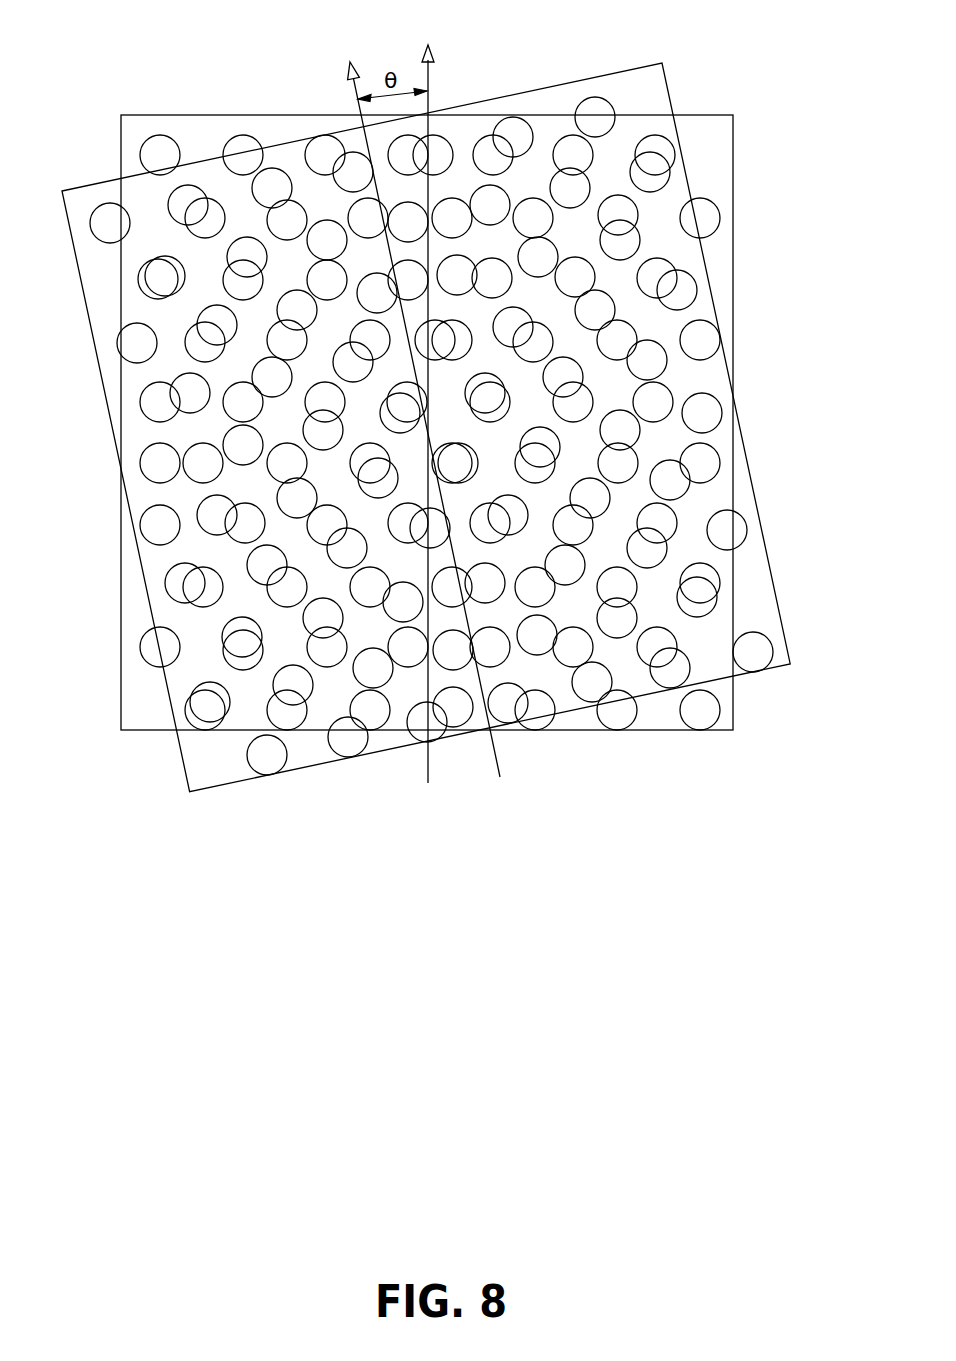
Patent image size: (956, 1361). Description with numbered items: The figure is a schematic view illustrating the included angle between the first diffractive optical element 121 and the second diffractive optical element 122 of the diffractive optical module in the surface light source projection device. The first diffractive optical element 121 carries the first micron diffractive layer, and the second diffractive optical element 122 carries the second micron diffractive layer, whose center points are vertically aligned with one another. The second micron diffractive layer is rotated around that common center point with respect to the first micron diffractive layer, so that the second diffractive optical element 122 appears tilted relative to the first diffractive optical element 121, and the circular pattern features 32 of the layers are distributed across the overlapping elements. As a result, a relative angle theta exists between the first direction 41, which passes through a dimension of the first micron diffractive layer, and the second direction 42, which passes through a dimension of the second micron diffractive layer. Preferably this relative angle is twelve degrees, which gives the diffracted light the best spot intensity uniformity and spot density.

The micro lens / circular pattern elements 32 is at (700, 200).
The first direction 41 is at (434, 399).
The second direction 42 is at (413, 404).
The first diffractive optical element 121 is at (702, 116).
The second diffractive optical element 122 is at (537, 88).